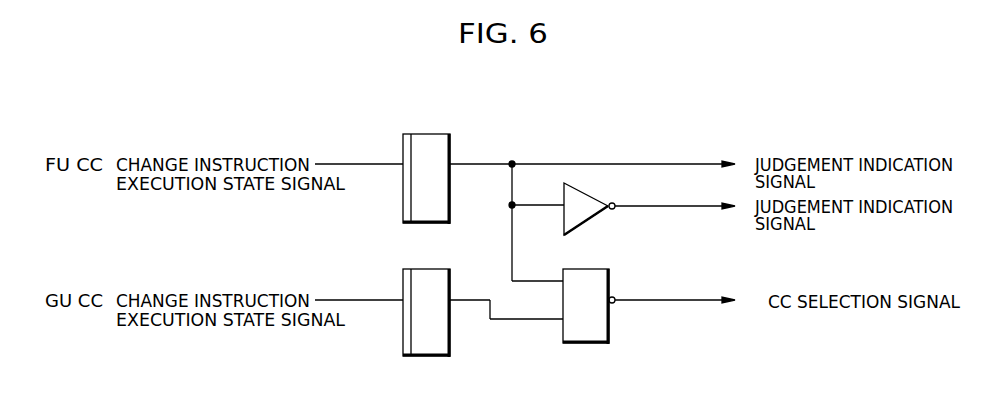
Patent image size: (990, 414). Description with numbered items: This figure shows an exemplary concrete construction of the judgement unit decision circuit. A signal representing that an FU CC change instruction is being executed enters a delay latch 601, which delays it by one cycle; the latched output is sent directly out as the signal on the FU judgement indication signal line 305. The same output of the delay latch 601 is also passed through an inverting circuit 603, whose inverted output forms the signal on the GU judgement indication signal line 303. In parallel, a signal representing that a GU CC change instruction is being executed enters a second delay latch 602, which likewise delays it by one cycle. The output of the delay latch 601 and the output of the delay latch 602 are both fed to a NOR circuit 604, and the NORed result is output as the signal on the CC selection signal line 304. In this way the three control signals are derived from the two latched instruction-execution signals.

The delay latch 601 is at (428, 134).
The delay latch 602 is at (418, 269).
The inverting circuit 603 is at (592, 200).
The NOR circuit 604 is at (609, 328).
The FU judgement indication signal line 305 is at (622, 161).
The GU judgement indication signal line 303 is at (697, 208).
The CC selection signal line 304 is at (637, 297).